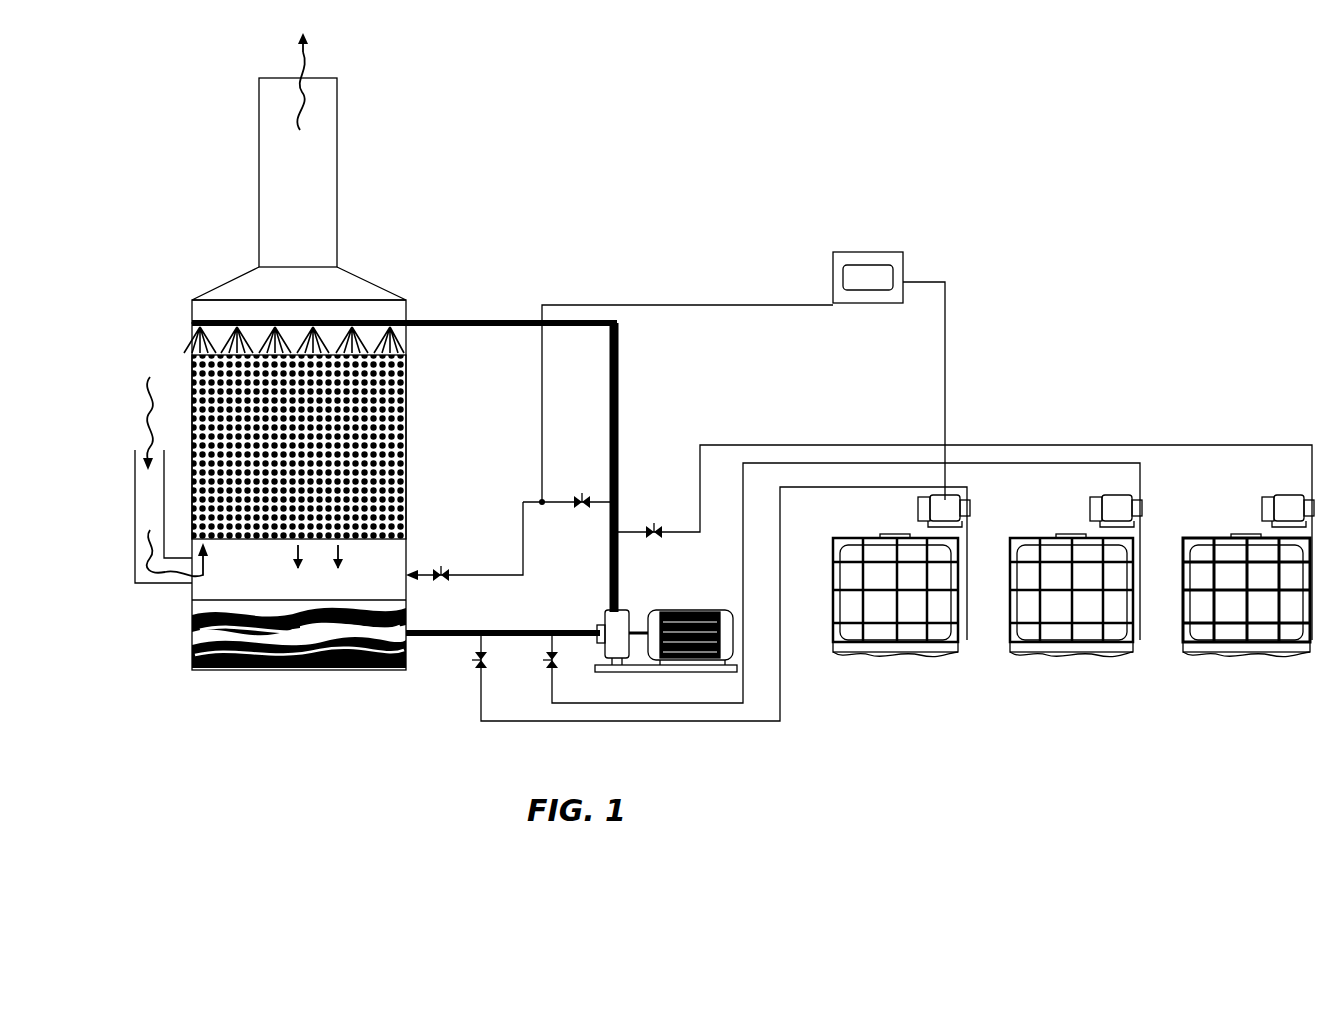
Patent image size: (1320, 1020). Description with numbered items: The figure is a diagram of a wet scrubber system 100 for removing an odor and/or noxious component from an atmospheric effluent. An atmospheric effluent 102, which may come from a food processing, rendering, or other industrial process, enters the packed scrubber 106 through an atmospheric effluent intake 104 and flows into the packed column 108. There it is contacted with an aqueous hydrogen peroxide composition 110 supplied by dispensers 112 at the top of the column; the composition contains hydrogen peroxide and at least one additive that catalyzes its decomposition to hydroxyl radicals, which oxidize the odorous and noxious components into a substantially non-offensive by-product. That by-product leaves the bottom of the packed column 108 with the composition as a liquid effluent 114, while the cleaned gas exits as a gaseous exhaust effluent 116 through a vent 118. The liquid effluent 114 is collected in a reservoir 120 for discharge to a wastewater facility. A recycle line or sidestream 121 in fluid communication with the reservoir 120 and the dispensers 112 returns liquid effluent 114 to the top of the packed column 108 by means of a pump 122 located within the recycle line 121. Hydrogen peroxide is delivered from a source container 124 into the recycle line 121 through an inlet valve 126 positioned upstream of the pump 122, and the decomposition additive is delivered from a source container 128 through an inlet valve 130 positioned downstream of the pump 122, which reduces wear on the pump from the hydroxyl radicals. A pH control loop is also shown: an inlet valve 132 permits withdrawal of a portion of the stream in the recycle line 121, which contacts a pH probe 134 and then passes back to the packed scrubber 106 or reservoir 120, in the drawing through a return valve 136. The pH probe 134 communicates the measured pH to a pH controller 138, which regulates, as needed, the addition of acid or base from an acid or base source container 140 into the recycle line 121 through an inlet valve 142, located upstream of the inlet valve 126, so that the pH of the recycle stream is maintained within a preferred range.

The system 100 is at (1003, 138).
The atmospheric effluent 102 is at (150, 398).
The atmospheric effluent intake 104 is at (135, 478).
The packed scrubber 106 is at (395, 283).
The packed column 108 is at (406, 420).
The aqueous hydrogen peroxide composition 110 is at (406, 342).
The dispenser 112 is at (192, 326).
The liquid effluent 114 is at (340, 556).
The gaseous exhaust effluent 116 is at (308, 58).
The vent 118 is at (338, 163).
The reservoir 120 is at (350, 672).
The recycle line 121 is at (622, 390).
The pump 122 is at (680, 608).
The source container 124 is at (1013, 660).
The inlet valve 126 is at (546, 668).
The source container 128 is at (1205, 660).
The inlet valve 130 is at (656, 521).
The inlet valve 132 is at (582, 490).
The pH probe 134 is at (540, 498).
The return valve 136 is at (448, 566).
The pH controller 138 is at (905, 258).
The acid or base source container 140 is at (848, 660).
The inlet valve 142 is at (476, 668).